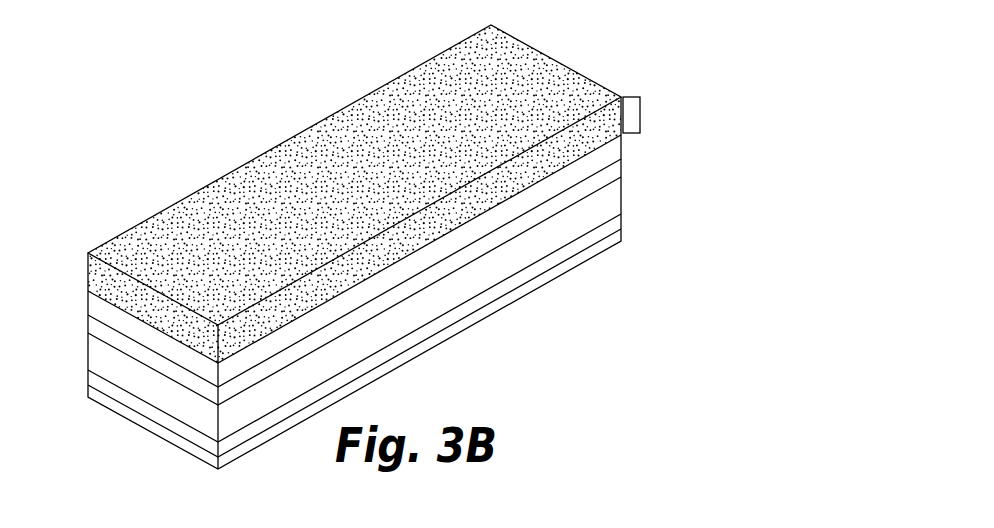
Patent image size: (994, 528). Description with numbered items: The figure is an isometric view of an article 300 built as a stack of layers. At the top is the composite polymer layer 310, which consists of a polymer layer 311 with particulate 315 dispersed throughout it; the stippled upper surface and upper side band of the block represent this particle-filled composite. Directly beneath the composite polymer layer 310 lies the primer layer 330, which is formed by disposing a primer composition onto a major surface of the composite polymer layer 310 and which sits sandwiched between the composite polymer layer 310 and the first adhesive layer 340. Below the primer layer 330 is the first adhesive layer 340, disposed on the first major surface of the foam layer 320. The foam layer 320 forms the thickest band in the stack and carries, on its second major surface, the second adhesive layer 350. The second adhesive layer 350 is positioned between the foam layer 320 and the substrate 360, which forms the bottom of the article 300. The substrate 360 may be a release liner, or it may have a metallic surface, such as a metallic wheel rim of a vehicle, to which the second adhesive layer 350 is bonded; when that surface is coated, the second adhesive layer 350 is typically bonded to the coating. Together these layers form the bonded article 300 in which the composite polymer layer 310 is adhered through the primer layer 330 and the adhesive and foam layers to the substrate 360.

The article 300 is at (582, 35).
The composite polymer layer 310 is at (97, 277).
The polymer layer 311 is at (640, 115).
The particulate 315 is at (238, 183).
The foam layer 320 is at (90, 355).
The primer layer 330 is at (93, 303).
The first adhesive layer 340 is at (90, 323).
The second adhesive layer 350 is at (85, 380).
The substrate 360 is at (110, 402).